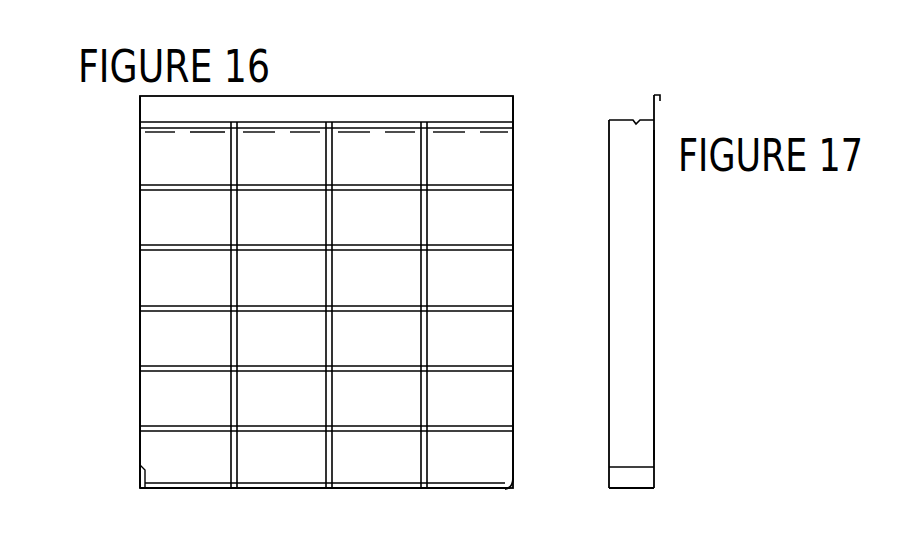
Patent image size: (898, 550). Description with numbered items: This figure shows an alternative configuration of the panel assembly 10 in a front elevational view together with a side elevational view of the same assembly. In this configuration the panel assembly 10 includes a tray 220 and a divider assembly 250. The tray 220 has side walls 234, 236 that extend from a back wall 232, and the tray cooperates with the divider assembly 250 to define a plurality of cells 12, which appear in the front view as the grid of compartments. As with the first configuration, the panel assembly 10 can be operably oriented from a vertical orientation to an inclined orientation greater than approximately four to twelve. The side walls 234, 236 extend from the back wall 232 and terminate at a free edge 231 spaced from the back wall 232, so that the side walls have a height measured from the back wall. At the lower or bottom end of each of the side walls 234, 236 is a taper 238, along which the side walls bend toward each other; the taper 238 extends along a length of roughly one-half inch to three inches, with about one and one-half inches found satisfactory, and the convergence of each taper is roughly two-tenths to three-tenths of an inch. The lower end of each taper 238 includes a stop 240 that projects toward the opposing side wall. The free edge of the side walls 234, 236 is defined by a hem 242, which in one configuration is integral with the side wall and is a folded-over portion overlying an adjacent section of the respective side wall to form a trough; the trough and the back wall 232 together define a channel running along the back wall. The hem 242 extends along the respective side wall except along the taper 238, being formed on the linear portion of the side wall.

In FIG. 16, the panel assembly 10 is at (461, 69).
In FIG. 16, the cells 12 is at (386, 225).
In FIG. 16, the tray 220 is at (122, 340).
In FIG. 17, the tray 220 is at (656, 328).
In FIG. 17, the free edge 231 is at (608, 173).
In FIG. 16, the back wall 232 is at (153, 215).
In FIG. 16, the side wall 234 is at (140, 272).
In FIG. 16, the side wall 236 is at (513, 293).
In FIG. 17, the side wall 236 is at (640, 250).
In FIG. 16, the taper 238 is at (140, 479).
In FIG. 17, the taper 238 is at (652, 480).
In FIG. 16, the stop 240 is at (505, 490).
In FIG. 16, the hem 242 is at (152, 405).
In FIG. 16, the divider assembly 250 is at (280, 160).